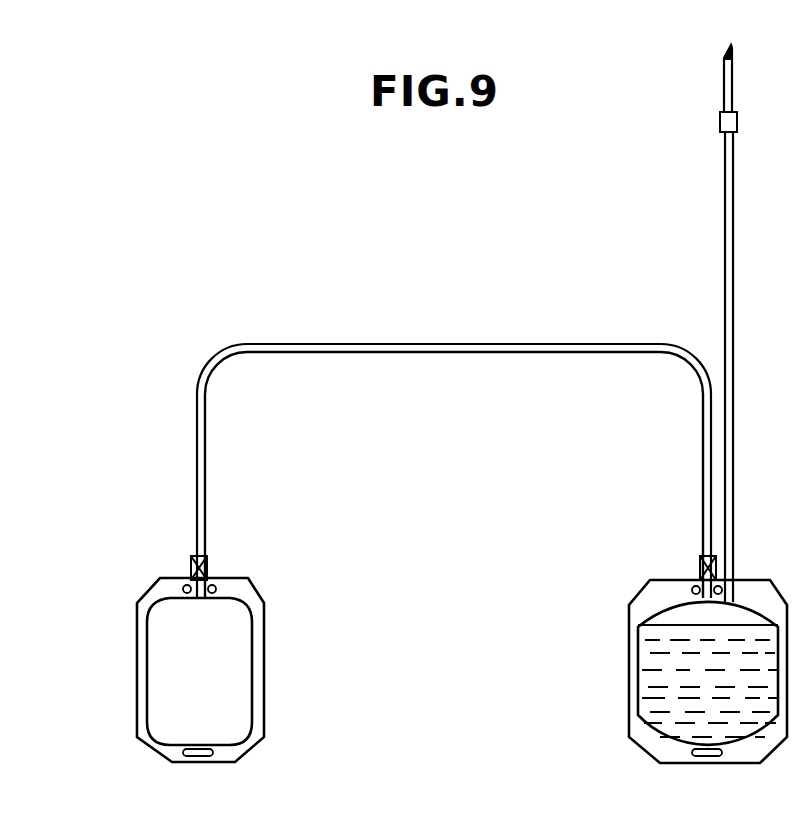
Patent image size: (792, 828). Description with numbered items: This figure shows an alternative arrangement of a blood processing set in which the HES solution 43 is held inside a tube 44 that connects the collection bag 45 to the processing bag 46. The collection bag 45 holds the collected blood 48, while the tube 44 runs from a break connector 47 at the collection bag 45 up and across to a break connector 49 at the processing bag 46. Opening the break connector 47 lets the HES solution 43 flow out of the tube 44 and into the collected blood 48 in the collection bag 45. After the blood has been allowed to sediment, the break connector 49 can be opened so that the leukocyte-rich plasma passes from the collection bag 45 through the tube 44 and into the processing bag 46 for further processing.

The HES solution 43 is at (455, 350).
The tube 44 is at (348, 342).
The collection bag 45 is at (648, 600).
The processing bag 46 is at (238, 590).
The break connector 47 is at (701, 561).
The collected blood 48 is at (650, 672).
The break connector 49 is at (205, 557).